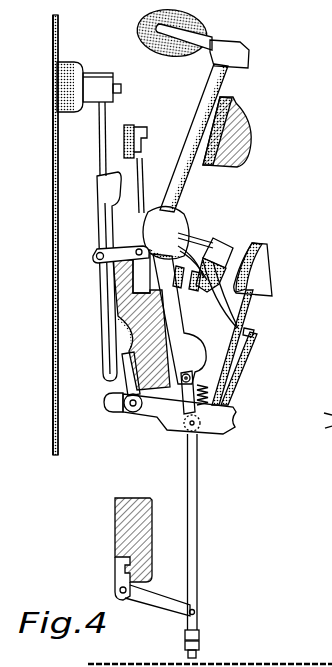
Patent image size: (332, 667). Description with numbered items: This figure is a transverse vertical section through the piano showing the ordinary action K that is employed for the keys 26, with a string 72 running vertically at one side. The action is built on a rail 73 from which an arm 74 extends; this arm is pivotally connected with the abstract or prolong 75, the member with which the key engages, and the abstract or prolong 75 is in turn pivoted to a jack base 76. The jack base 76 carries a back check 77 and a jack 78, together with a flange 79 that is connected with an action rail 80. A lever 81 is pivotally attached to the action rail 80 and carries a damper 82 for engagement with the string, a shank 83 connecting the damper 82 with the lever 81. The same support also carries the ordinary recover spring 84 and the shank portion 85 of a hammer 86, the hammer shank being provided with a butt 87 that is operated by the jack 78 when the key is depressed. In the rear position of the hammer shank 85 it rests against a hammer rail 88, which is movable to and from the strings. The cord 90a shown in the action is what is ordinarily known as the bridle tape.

The key 26 is at (300, 662).
The string 72 is at (55, 388).
The rail 73 is at (115, 545).
The arm 74 is at (163, 612).
The abstract or prolong 75 is at (198, 542).
The jack base 76 is at (179, 414).
The back check 77 is at (247, 287).
The jack 78 is at (180, 332).
The flange 79 is at (129, 410).
The action rail 80 is at (131, 321).
The lever 81 is at (95, 228).
The damper 82 is at (70, 113).
The shank 83 is at (105, 109).
The recover spring 84 is at (148, 175).
The shank portion of hammer 85 is at (222, 80).
The hammer 86 is at (170, 56).
The butt 87 is at (148, 230).
The hammer rail 88 is at (250, 160).
The cord (bridle tape) 90a is at (254, 334).
The action K is at (166, 528).